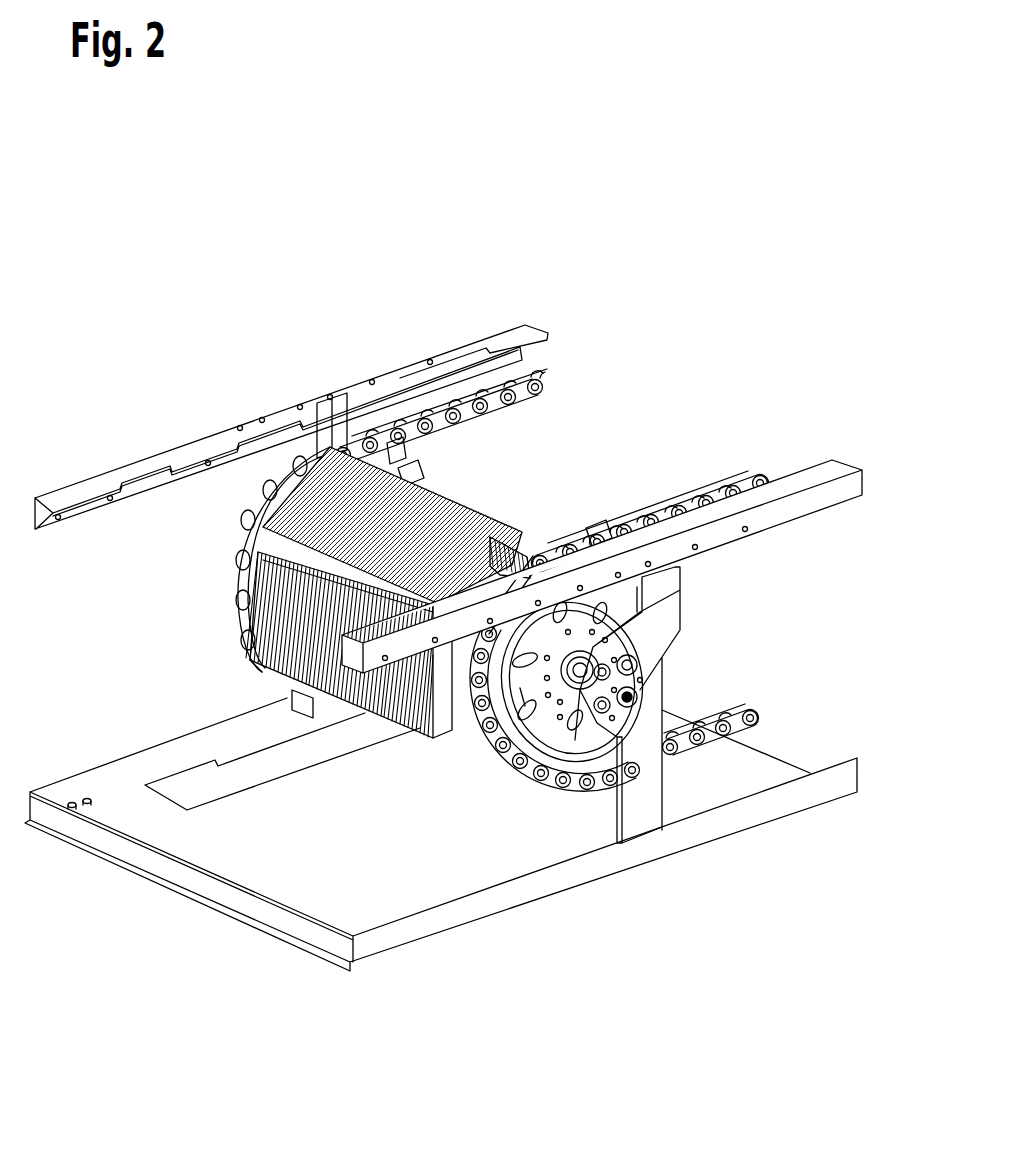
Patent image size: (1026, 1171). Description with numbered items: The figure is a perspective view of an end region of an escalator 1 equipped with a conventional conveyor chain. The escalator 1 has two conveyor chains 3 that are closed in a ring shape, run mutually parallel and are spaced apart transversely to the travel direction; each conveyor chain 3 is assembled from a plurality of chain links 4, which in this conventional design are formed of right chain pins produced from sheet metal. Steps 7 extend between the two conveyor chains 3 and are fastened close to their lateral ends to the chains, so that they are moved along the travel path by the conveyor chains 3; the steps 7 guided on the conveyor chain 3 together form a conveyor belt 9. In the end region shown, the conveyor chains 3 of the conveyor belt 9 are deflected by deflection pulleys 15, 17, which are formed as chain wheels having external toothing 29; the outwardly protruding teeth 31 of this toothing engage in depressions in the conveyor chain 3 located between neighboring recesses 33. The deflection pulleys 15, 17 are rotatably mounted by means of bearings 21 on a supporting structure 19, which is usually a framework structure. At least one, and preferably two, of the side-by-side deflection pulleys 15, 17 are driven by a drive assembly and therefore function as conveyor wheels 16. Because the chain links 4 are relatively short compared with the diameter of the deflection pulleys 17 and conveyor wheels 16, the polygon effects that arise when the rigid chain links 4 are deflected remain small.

The escalator 1 is at (458, 298).
The conveyor chain 3 is at (510, 370).
The chain link 4 is at (433, 420).
The step 7 is at (352, 438).
The conveyor belt 9 is at (520, 503).
The deflection pulley 15 is at (613, 623).
The conveyor wheel 16 is at (538, 786).
The deflection pulley 17 is at (548, 742).
The supporting structure 19 is at (849, 514).
The bearing 21 is at (629, 707).
The external toothing 29 is at (432, 477).
The tooth 31 is at (395, 455).
The recess 33 is at (410, 463).